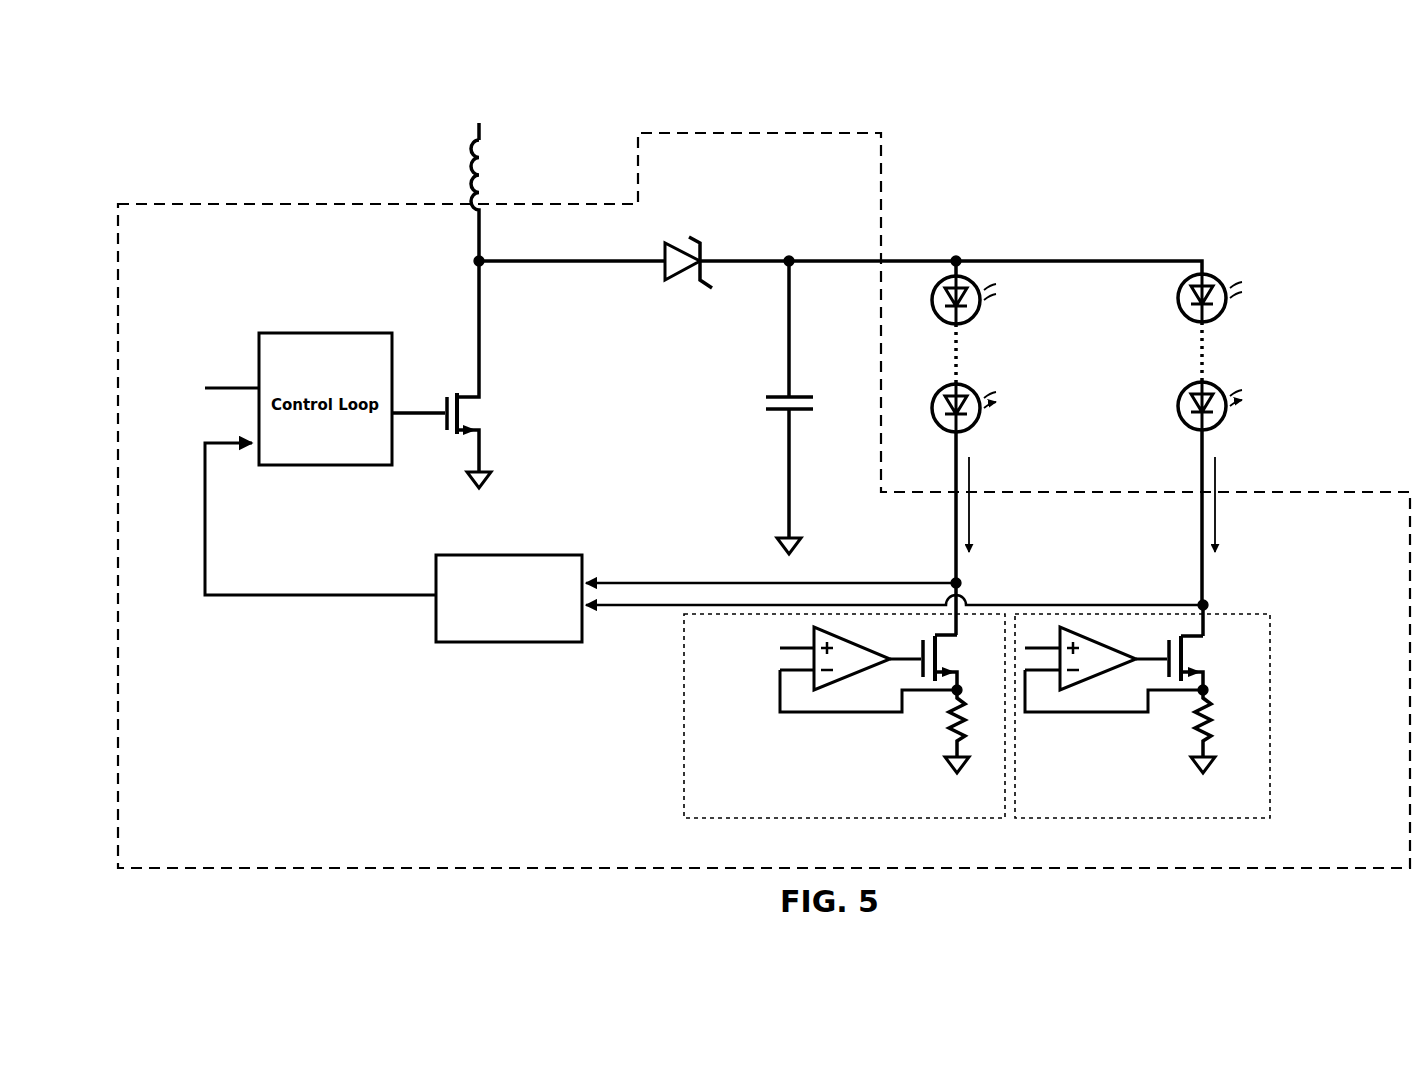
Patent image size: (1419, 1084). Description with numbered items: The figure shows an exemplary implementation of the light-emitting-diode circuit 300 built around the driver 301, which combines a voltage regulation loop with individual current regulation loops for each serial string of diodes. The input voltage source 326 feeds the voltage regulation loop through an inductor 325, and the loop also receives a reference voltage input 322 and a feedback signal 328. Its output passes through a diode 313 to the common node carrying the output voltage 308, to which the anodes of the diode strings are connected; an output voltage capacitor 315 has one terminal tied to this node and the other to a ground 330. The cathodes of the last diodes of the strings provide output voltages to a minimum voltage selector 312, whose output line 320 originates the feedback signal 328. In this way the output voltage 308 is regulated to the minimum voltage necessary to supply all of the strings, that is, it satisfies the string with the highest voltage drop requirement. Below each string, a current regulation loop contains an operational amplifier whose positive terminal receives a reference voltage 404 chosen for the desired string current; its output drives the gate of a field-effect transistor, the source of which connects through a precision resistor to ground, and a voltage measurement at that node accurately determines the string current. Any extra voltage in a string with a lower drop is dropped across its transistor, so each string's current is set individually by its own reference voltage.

The LED driver system 300 is at (1125, 163).
The LED driver 301 is at (155, 204).
The output voltage Vout 308 is at (786, 258).
The minimum voltage selector 312 is at (530, 556).
The diode 313 is at (688, 245).
The output voltage capacitor 315 is at (765, 400).
The output line 320 is at (308, 595).
The reference voltage input VREF 322 is at (215, 380).
The inductor 325 is at (520, 178).
The input voltage source VIN 326 is at (512, 126).
The feedback signal 328 is at (226, 440).
The ground 330 is at (478, 416).
The reference voltage VREF1 404 is at (760, 645).